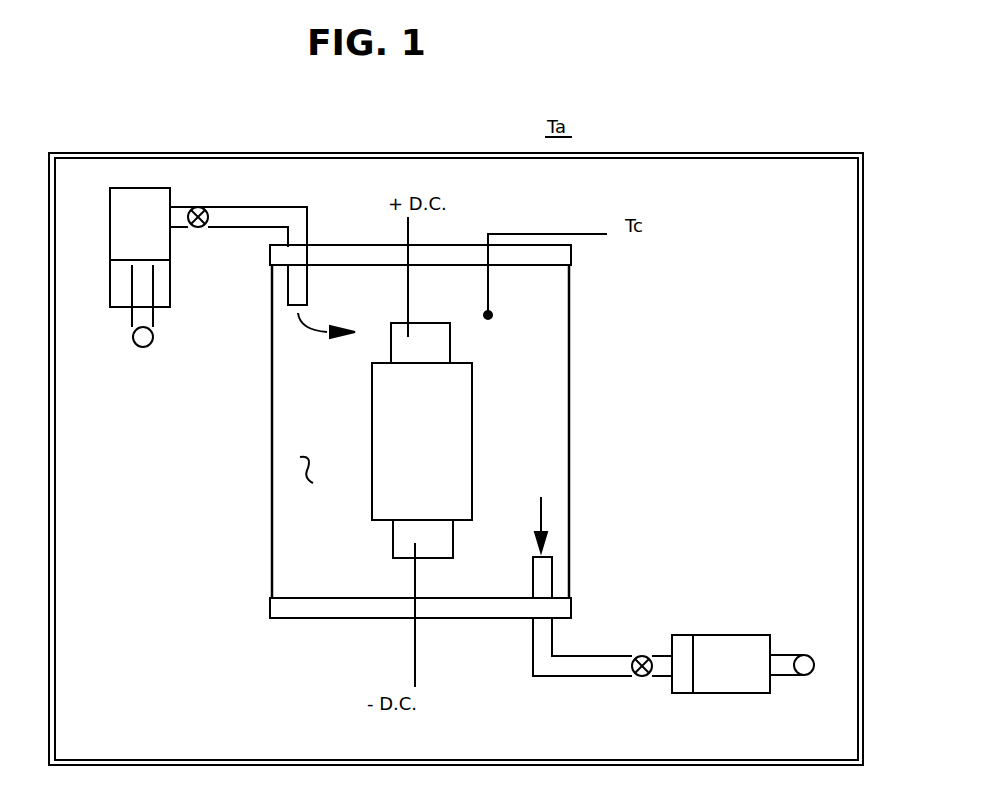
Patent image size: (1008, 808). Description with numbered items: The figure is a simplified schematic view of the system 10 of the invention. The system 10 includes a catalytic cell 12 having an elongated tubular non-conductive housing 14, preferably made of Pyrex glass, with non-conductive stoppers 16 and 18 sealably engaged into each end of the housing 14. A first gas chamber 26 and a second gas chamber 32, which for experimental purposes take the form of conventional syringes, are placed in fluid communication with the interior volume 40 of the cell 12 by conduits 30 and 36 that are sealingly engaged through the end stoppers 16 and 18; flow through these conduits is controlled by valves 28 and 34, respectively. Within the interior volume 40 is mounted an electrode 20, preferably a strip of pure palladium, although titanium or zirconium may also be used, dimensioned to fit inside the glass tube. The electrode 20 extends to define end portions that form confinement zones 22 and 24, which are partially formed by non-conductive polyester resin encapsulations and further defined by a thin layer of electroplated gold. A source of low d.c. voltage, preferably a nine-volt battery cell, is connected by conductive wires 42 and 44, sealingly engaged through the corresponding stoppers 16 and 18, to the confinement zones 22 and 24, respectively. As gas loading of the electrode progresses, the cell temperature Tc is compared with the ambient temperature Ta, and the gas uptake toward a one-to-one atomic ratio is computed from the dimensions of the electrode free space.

The system 10 is at (700, 135).
The catalytic cell 12 is at (476, 436).
The elongated tubular non-conductive housing 14 is at (572, 470).
The non-conductive stopper 16 is at (455, 243).
The non-conductive stopper 18 is at (478, 618).
The electrode 20 is at (472, 432).
The confinement zone 22 is at (388, 338).
The confinement zone 24 is at (392, 538).
The first gas chamber 26 is at (128, 186).
The valve 28 is at (199, 205).
The conduit 30 is at (308, 230).
The second gas chamber 32 is at (720, 633).
The valve 34 is at (642, 655).
The conduit 36 is at (553, 582).
The interior volume 40 is at (313, 483).
The conductive wire 42 is at (412, 292).
The conductive wire 44 is at (408, 655).